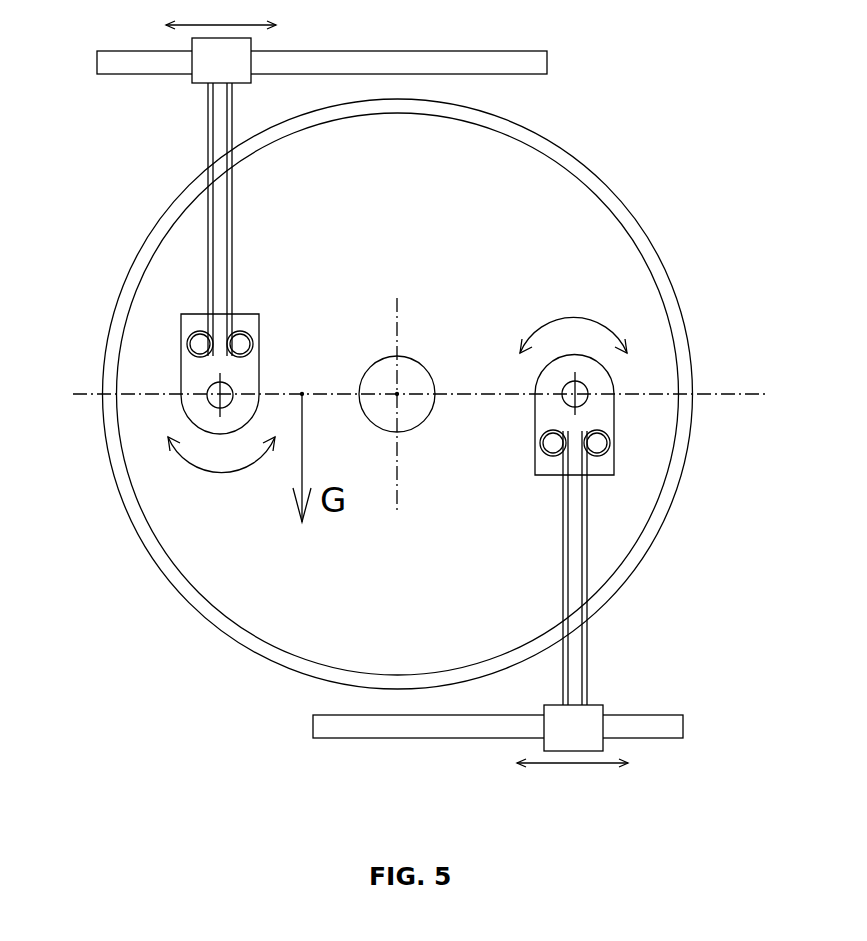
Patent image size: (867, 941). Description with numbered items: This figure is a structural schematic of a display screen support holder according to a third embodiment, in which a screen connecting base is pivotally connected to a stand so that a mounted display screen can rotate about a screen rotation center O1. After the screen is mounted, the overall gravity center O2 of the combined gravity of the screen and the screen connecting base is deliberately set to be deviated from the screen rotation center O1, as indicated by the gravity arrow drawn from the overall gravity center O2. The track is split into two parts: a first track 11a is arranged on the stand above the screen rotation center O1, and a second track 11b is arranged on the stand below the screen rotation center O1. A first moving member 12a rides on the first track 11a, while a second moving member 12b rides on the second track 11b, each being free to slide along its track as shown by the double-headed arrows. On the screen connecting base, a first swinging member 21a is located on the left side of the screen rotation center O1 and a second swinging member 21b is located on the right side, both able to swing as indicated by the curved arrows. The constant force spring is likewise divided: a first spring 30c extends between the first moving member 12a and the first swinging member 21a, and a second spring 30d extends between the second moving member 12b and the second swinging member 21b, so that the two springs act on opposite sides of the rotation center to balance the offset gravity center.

The first track 11a is at (508, 65).
The second track 11b is at (368, 727).
The first moving member 12a is at (197, 80).
The second moving member 12b is at (585, 720).
The first swinging member 21a is at (193, 385).
The second swinging member 21b is at (600, 387).
The first spring 30c is at (208, 265).
The second spring 30d is at (587, 525).
The screen rotation center O1 is at (397, 394).
The overall gravity center O2 is at (302, 394).